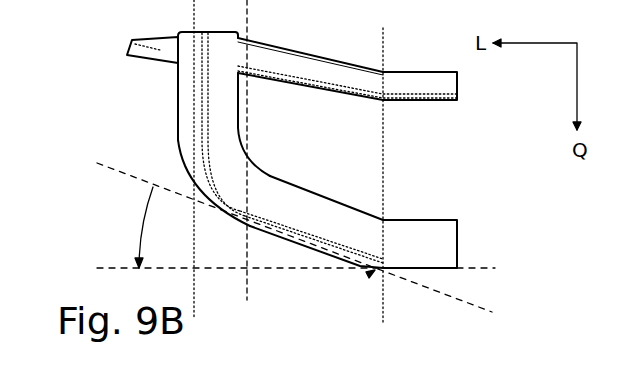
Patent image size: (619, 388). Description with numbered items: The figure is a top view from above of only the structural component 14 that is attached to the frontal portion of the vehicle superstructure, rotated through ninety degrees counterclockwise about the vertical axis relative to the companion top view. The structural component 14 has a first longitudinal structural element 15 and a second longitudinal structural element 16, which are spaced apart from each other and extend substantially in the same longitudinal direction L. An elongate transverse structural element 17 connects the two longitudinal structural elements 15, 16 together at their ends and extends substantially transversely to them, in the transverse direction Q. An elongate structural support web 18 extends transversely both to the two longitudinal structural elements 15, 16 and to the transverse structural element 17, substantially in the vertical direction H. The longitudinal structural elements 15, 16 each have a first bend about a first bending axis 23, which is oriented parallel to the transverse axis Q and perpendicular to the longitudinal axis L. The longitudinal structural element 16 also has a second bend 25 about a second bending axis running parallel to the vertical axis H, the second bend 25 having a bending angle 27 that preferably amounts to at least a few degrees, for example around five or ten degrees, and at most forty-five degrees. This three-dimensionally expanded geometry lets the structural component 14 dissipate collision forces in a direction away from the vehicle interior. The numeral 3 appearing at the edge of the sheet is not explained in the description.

The clip 3 is at (11, 90).
The structural component 14 is at (98, 160).
The first longitudinal structural element 15 is at (320, 73).
The second longitudinal structural element 16 is at (310, 213).
The transverse structural element 17 is at (173, 97).
The structural support web 18 is at (130, 41).
The first bending axis 23 is at (383, 192).
The second bend 25 is at (368, 275).
The bending angle 27 is at (182, 244).